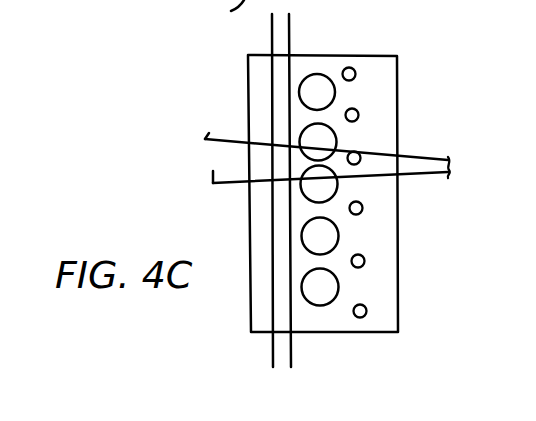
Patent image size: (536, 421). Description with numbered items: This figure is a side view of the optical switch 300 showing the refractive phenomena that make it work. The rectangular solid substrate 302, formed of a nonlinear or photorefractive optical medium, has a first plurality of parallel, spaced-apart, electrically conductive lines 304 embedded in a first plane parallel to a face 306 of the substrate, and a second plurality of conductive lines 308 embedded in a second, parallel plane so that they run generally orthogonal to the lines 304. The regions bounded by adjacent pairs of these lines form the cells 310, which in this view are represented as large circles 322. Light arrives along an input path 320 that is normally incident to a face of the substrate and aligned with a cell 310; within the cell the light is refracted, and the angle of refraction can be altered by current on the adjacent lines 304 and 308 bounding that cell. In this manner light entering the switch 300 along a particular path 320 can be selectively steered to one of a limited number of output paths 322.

The optical switch 300 is at (382, 40).
The substrate 302 is at (386, 291).
The first plurality of electrically conductive lines 304 is at (272, 343).
The face of the substrate 306 is at (22, 54).
The second plurality of electrically conductive lines 308 is at (358, 154).
The cell 310 is at (326, 291).
The input path 320 is at (205, 139).
The optical fibers 322 is at (448, 158).